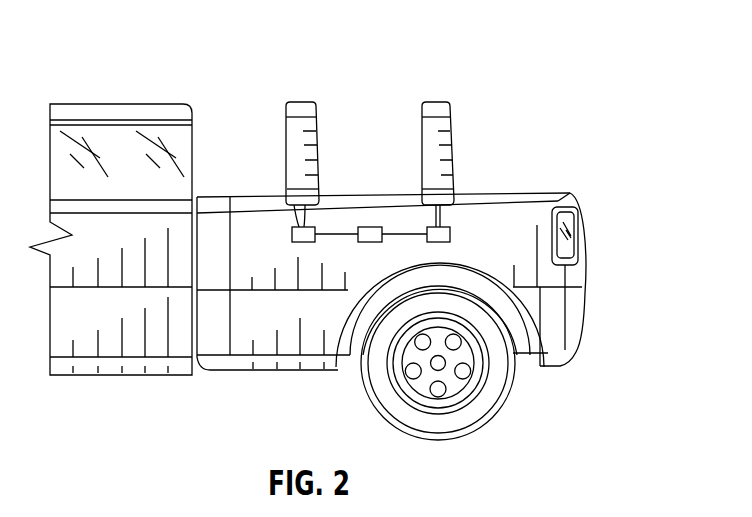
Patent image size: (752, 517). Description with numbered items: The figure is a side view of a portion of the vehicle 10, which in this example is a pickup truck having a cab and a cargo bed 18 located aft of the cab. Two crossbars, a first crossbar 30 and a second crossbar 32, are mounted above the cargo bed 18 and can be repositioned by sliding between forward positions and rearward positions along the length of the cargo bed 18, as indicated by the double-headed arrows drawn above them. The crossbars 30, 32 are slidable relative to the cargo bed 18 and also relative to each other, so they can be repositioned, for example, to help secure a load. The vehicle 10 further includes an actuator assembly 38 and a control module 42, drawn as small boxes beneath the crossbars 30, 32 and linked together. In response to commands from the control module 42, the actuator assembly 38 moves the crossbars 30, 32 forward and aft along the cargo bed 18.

The vehicle 10 is at (100, 104).
The cargo bed 18 is at (512, 193).
The first crossbar 30 is at (262, 86).
The second crossbar 32 is at (395, 86).
The actuator assembly 38 is at (292, 230).
The control module 42 is at (366, 227).